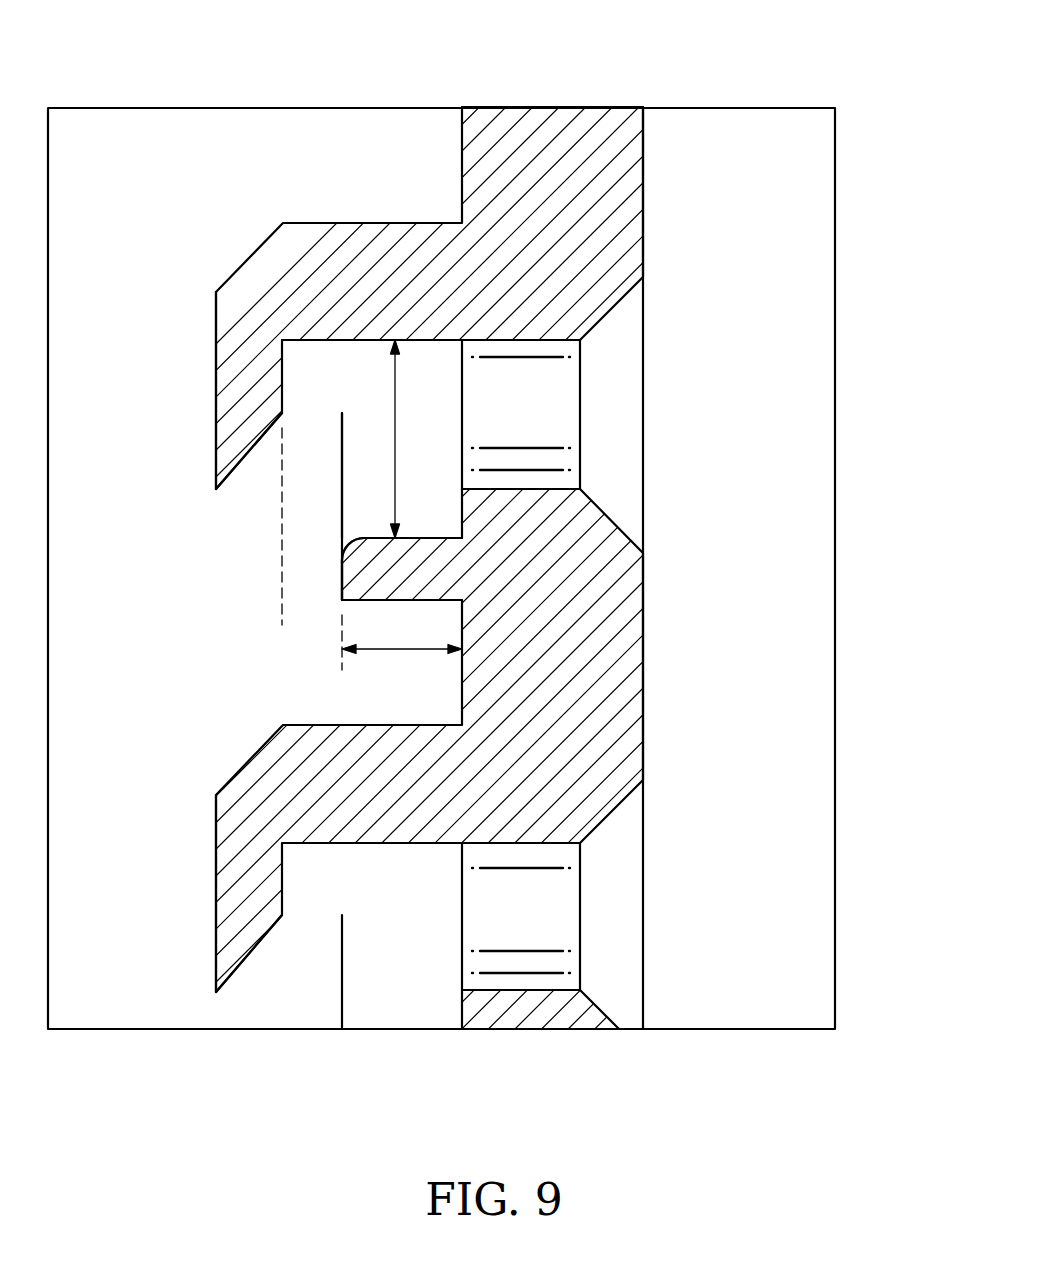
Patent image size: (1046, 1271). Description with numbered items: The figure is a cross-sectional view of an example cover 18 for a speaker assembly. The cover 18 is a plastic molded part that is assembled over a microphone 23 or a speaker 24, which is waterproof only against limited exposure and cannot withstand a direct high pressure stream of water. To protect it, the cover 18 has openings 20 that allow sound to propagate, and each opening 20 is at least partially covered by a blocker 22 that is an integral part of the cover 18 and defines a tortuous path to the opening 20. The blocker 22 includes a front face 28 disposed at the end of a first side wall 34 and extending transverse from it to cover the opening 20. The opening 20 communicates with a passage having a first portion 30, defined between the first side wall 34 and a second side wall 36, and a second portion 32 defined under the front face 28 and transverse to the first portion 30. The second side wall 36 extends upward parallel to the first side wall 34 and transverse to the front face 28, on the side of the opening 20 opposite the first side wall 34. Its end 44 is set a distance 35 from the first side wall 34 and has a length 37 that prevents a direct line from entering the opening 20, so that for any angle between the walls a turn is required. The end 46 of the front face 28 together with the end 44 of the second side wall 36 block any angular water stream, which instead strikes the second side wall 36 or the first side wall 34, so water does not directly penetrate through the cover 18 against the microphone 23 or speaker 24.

The cover 18 is at (551, 78).
The opening 20 is at (617, 448).
The blocker 22 is at (435, 242).
The microphone 23 is at (499, 568).
The speaker 24 is at (692, 363).
The front face 28 is at (204, 357).
The first portion 30 is at (442, 424).
The second portion 32 is at (322, 558).
The first side wall 34 is at (357, 352).
The distance 35 is at (393, 448).
The second side wall 36 is at (433, 524).
The length 37 is at (402, 652).
The end of the second side wall 44 is at (330, 582).
The end of the front face 46 is at (204, 467).